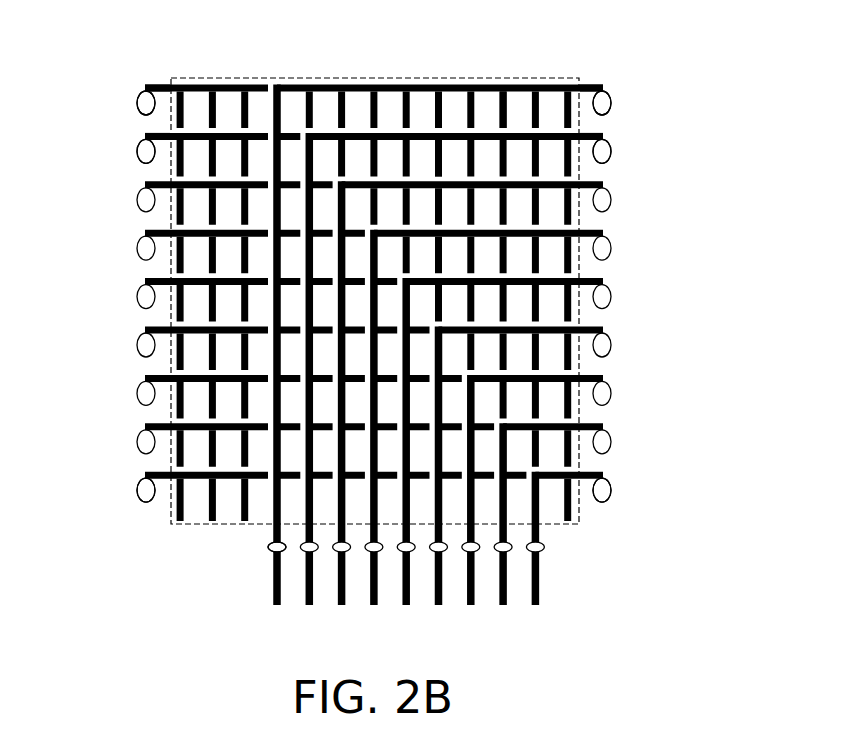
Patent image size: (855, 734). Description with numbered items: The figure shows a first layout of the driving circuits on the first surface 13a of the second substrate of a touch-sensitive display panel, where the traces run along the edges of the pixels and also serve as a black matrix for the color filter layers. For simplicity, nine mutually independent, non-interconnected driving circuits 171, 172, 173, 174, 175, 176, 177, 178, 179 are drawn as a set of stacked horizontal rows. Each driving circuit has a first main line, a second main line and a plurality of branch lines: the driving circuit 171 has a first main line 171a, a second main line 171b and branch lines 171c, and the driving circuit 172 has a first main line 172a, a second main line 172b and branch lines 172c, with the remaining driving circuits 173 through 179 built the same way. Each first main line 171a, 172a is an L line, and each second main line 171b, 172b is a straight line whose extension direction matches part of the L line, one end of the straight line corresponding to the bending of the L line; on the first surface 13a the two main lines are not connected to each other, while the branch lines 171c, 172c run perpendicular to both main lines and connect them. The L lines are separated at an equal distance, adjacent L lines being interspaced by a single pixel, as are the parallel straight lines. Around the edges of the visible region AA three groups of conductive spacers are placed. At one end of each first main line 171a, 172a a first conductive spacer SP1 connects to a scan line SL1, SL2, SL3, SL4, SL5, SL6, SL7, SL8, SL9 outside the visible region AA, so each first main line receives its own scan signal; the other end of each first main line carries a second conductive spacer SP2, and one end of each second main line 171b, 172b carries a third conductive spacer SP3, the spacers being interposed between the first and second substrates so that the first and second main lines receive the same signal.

The first surface 13a is at (781, 37).
The driving circuit 171 is at (642, 92).
The driving circuit 172 is at (642, 140).
The driving circuit 173 is at (642, 189).
The driving circuit 174 is at (642, 237).
The driving circuit 175 is at (642, 286).
The driving circuit 176 is at (642, 334).
The driving circuit 177 is at (642, 382).
The driving circuit 178 is at (642, 431).
The driving circuit 179 is at (642, 479).
The first main line 171a is at (587, 85).
The second main line 171b is at (159, 86).
The branch lines 171c is at (505, 108).
The first main line 172a is at (587, 133).
The second main line 172b is at (160, 134).
The branch lines 172c is at (445, 153).
The visible region AA is at (203, 82).
The first conductive spacer SP1 is at (265, 552).
The second conductive spacer SP2 is at (602, 513).
The third conductive spacer SP3 is at (147, 513).
The scan line SL1 is at (279, 361).
The scan line SL2 is at (309, 397).
The scan line SL3 is at (341, 409).
The scan line SL4 is at (373, 446).
The scan line SL5 is at (404, 457).
The scan line SL6 is at (438, 495).
The scan line SL7 is at (469, 506).
The scan line SL8 is at (503, 542).
The scan line SL9 is at (534, 554).